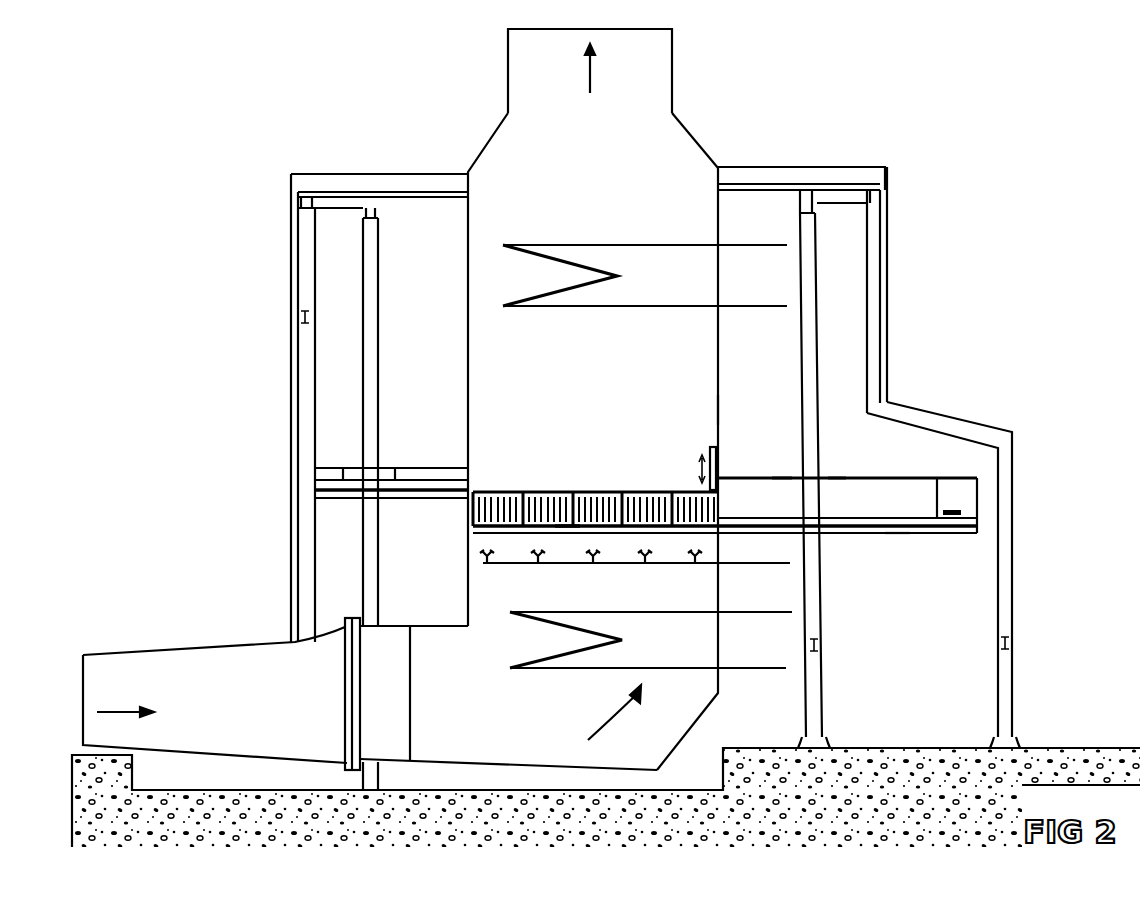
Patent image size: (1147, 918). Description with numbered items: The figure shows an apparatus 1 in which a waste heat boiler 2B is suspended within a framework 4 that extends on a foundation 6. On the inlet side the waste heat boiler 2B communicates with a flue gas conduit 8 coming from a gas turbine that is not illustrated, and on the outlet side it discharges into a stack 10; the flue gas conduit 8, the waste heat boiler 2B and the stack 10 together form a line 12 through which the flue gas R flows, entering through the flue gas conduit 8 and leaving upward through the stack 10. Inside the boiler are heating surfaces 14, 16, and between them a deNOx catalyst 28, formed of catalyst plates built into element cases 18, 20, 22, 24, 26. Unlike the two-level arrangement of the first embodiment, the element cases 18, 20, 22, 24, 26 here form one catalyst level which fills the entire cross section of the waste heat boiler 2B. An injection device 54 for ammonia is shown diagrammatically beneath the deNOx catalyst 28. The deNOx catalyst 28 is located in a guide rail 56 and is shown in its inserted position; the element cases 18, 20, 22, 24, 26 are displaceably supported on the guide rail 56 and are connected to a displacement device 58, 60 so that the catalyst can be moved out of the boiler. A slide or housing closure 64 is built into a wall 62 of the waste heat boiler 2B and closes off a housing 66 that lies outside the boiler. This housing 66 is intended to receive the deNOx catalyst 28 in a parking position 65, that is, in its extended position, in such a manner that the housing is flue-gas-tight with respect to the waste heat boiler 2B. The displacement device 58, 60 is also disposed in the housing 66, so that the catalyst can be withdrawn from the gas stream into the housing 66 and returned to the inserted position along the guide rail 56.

The apparatus 1 is at (792, 134).
The waste heat boiler 2B is at (697, 363).
The framework 4 is at (378, 268).
The foundation 6 is at (72, 805).
The flue gas conduit 8 is at (185, 673).
The stack 10 is at (666, 60).
The line 12 is at (672, 83).
The heating surface 14 is at (603, 604).
The heating surface 16 is at (600, 241).
The element case 18 is at (489, 490).
The element case 20 is at (538, 490).
The element case 22 is at (588, 490).
The element case 24 is at (637, 490).
The element case 26 is at (690, 490).
The deNOx catalyst 28 is at (503, 517).
The injection device 54 is at (760, 563).
The guide rail 56 is at (563, 530).
The displacement device 58 is at (862, 510).
The displacement device 60 is at (963, 488).
The wall 62 is at (718, 410).
The slide or housing closure 64 is at (717, 456).
The parking position 65 is at (836, 493).
The housing 66 is at (780, 478).